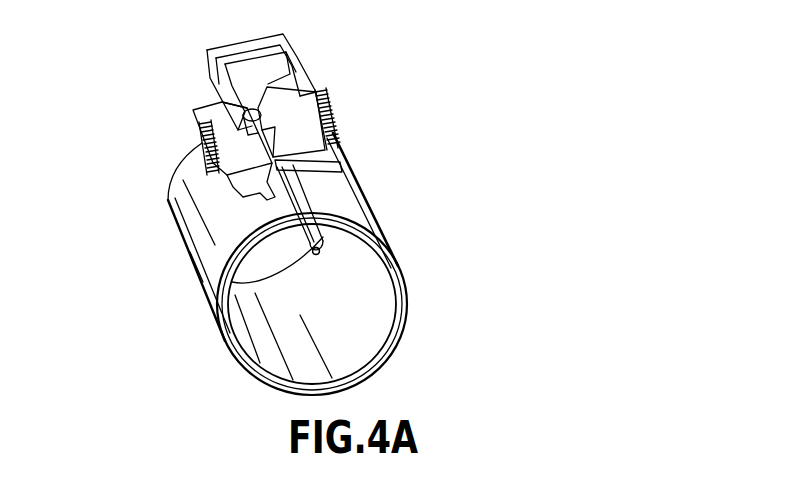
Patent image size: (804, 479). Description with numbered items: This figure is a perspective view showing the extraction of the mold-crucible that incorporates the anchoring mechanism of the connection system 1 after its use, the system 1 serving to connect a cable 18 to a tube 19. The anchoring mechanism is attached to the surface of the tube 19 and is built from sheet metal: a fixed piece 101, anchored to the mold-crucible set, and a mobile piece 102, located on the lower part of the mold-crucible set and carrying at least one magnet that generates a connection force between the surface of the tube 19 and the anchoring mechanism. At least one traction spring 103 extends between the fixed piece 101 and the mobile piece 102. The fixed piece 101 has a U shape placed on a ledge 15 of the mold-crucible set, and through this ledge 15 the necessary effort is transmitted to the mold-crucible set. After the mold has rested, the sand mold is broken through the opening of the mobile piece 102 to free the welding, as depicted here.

The connection system 1 is at (270, 129).
The fixed piece 101 is at (312, 90).
The mobile piece 102 is at (338, 165).
The traction spring 103 is at (333, 106).
The ledge 15 is at (337, 133).
The cable 18 is at (323, 236).
The tube 19 is at (198, 257).